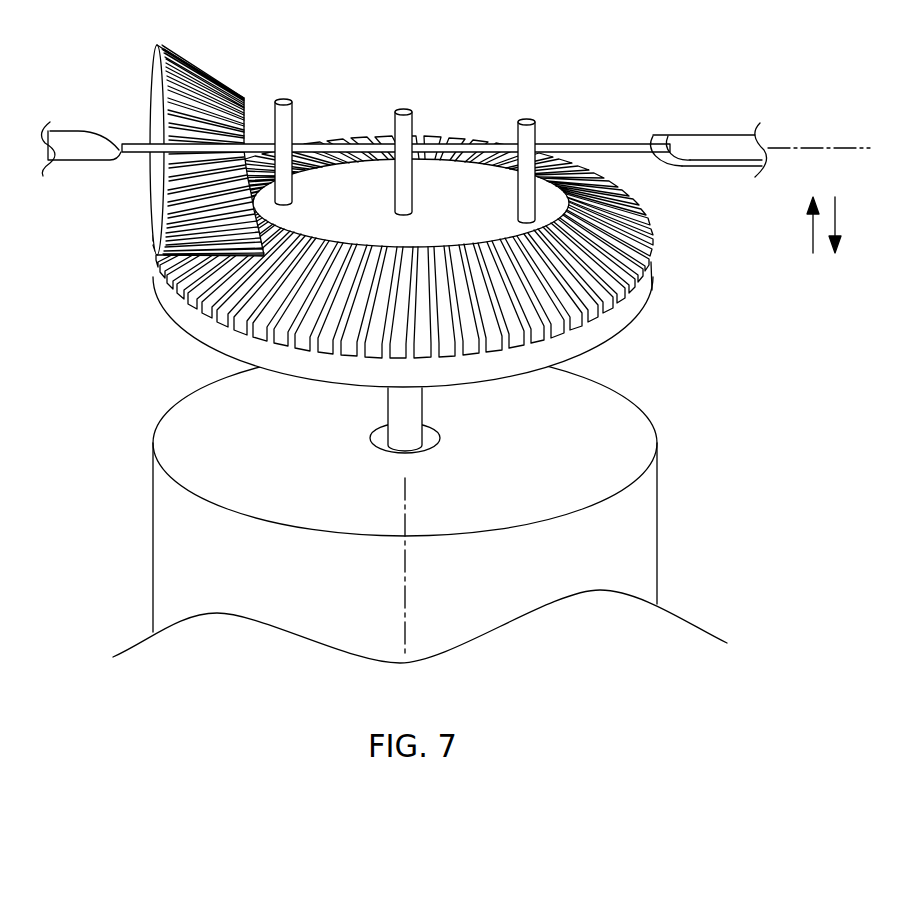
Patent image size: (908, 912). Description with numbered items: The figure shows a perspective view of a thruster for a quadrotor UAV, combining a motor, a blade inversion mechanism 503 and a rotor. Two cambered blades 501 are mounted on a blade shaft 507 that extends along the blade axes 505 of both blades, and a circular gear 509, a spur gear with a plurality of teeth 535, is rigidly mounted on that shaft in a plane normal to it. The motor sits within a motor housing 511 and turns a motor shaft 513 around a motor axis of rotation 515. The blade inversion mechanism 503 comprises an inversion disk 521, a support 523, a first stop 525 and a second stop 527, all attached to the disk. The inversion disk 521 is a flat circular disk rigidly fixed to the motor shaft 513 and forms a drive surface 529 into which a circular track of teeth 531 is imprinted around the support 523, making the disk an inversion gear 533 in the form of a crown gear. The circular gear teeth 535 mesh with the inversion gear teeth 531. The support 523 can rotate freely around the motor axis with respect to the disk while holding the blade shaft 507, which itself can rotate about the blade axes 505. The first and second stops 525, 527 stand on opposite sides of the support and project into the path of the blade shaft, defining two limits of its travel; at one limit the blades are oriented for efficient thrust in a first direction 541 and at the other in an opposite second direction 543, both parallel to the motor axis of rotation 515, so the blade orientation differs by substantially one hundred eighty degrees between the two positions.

The blades 501 is at (70, 138).
The blade inversion mechanism 503 is at (422, 229).
The blade axis 505 is at (818, 148).
The blade shaft 507 is at (471, 143).
The circular gear 509 is at (154, 217).
The motor housing 511 is at (160, 435).
The motor shaft 513 is at (415, 418).
The motor axis of rotation 515 is at (405, 567).
The inversion disk 521 is at (603, 340).
The support 523 is at (405, 111).
The first stop 525 is at (525, 121).
The second stop 527 is at (284, 101).
The drive surface 529 is at (503, 224).
The teeth 531 is at (277, 232).
The inversion gear 533 is at (652, 296).
The circular gear teeth 535 is at (183, 148).
The first direction 541 is at (812, 234).
The second direction 543 is at (837, 216).